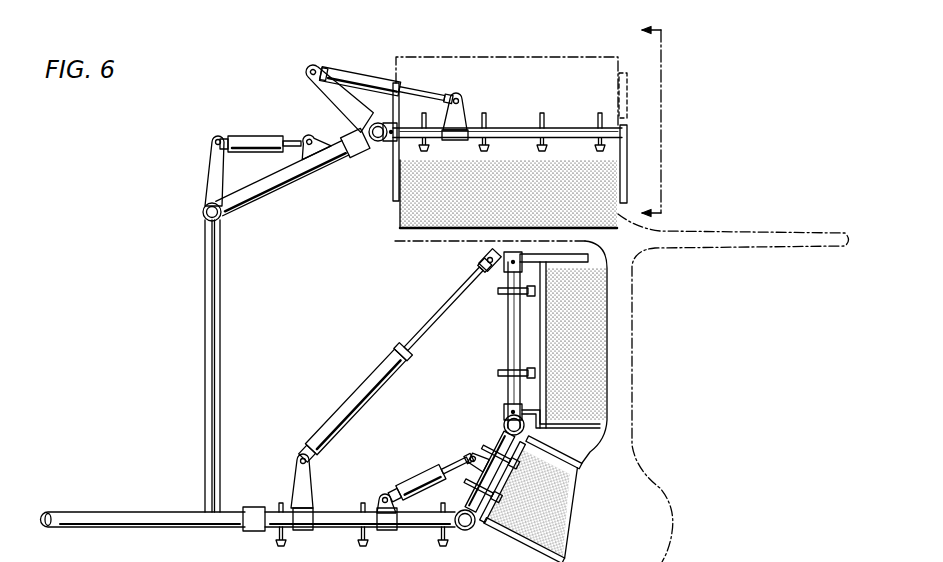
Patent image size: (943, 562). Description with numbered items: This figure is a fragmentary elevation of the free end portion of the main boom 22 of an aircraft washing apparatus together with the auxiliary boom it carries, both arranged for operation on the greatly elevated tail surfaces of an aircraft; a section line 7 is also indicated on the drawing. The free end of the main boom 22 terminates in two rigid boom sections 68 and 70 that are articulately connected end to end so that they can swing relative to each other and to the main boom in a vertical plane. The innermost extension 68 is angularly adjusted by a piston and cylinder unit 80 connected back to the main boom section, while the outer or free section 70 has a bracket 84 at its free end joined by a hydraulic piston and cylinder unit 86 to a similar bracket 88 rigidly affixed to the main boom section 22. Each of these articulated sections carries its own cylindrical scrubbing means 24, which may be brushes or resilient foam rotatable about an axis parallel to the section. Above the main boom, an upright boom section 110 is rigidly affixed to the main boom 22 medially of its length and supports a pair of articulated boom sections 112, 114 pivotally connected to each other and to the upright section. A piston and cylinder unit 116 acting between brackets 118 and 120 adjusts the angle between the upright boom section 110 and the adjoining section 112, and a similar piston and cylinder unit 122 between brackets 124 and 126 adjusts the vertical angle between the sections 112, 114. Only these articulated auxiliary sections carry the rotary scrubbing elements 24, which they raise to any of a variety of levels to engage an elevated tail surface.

The section line 7- 7 is at (649, 122).
The main boom section 22 is at (95, 511).
The scrubbing means 24 is at (521, 210).
The boom section 68 is at (498, 444).
The boom section 70 is at (508, 350).
The piston and cylinder unit 80 is at (416, 480).
The bracket 84 is at (486, 254).
The piston and cylinder unit 86 is at (374, 370).
The bracket 88 is at (297, 472).
The upright boom section 110 is at (205, 360).
The articulated boom section 112 is at (270, 198).
The articulated boom section 114 is at (570, 127).
The piston and cylinder unit 116 is at (251, 136).
The bracket 118 is at (318, 135).
The bracket 120 is at (206, 180).
The piston and cylinder unit 122 is at (372, 78).
The bracket 124 is at (312, 98).
The bracket 126 is at (460, 108).